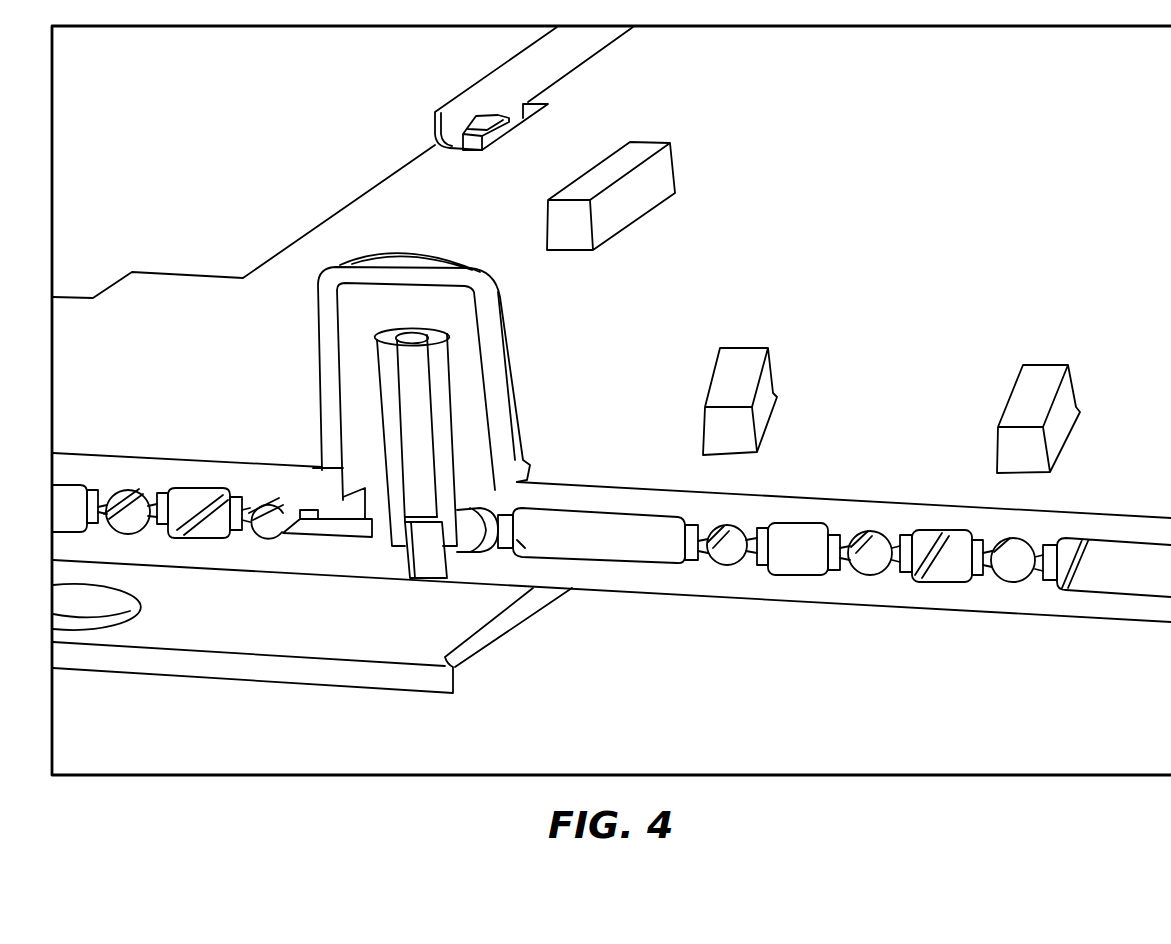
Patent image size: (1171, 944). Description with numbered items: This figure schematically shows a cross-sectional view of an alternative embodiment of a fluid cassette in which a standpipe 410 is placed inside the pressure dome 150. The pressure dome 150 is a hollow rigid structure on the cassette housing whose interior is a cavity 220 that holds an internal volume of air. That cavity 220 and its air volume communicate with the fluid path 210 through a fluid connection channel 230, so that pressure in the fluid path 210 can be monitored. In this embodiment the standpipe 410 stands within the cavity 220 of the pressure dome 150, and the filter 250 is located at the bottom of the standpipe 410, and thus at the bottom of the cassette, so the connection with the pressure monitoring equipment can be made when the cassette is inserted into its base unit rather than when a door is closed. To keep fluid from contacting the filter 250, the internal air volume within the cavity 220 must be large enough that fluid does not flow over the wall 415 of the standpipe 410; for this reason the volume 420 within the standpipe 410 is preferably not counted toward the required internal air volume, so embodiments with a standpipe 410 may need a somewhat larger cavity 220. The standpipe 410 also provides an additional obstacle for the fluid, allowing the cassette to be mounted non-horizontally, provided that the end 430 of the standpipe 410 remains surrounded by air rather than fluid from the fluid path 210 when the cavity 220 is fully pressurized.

The pressure dome 150 is at (318, 303).
The cavity 220 is at (462, 360).
The end of the standpipe 430 is at (407, 343).
The standpipe 410 is at (388, 377).
The wall of the standpipe 415 is at (388, 403).
The standpipe volume 420 is at (417, 432).
The fluid path 210 is at (270, 527).
The fluid connection channel 230 is at (332, 537).
The filter 250 is at (425, 563).